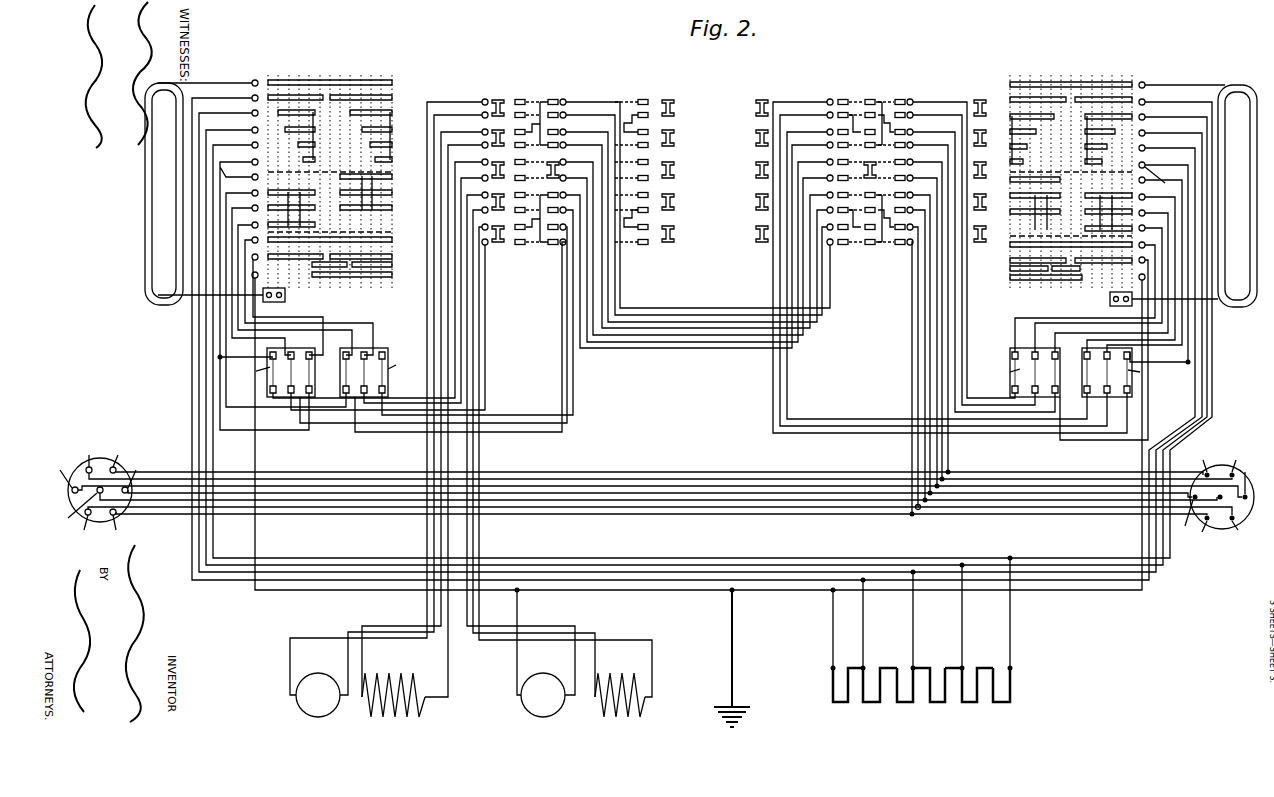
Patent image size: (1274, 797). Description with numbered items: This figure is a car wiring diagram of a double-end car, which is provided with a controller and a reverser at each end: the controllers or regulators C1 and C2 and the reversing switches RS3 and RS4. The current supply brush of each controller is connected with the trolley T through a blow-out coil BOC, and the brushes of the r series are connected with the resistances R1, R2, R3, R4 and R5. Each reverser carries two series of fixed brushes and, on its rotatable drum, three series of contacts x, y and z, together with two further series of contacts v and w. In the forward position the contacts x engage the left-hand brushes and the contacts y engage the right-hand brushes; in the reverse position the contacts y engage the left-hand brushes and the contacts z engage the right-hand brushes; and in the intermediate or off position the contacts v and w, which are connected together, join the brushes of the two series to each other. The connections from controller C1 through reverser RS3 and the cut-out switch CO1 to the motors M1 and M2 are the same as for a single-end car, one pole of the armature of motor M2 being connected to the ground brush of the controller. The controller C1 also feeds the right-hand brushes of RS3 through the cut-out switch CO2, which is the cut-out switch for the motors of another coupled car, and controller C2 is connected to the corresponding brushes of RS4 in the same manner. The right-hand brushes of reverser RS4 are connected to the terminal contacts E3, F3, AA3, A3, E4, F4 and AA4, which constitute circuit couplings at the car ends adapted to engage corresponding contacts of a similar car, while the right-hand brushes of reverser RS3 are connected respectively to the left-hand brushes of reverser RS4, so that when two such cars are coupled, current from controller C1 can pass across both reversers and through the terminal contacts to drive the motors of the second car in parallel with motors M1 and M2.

The controller C1 is at (315, 162).
The controller C2 is at (1100, 237).
The reversing switch RS3 is at (629, 366).
The reversing switch RS4 is at (950, 276).
The blow-out coil BOC is at (691, 195).
The trolley T is at (697, 297).
The cut-out switch CO1 is at (696, 372).
The cut-out switch CO2 is at (700, 372).
The motor M1 is at (360, 708).
The motor M2 is at (580, 667).
The resistance R1 is at (840, 645).
The resistance R2 is at (879, 640).
The resistance R3 is at (921, 636).
The resistance R4 is at (969, 633).
The resistance R5 is at (1009, 629).
The terminal contact E3 is at (660, 460).
The terminal contact E4 is at (659, 460).
The terminal contact AA3 is at (660, 499).
The terminal contact AA4 is at (653, 478).
The terminal contact A3 is at (633, 509).
The terminal contact F3 is at (662, 527).
The terminal contact F4 is at (662, 527).
The reverser drum contacts x is at (630, 161).
The reverser drum contacts v is at (689, 163).
The reverser drum contacts y is at (711, 163).
The reverser drum contacts w is at (760, 163).
The reverser drum contacts z is at (824, 161).